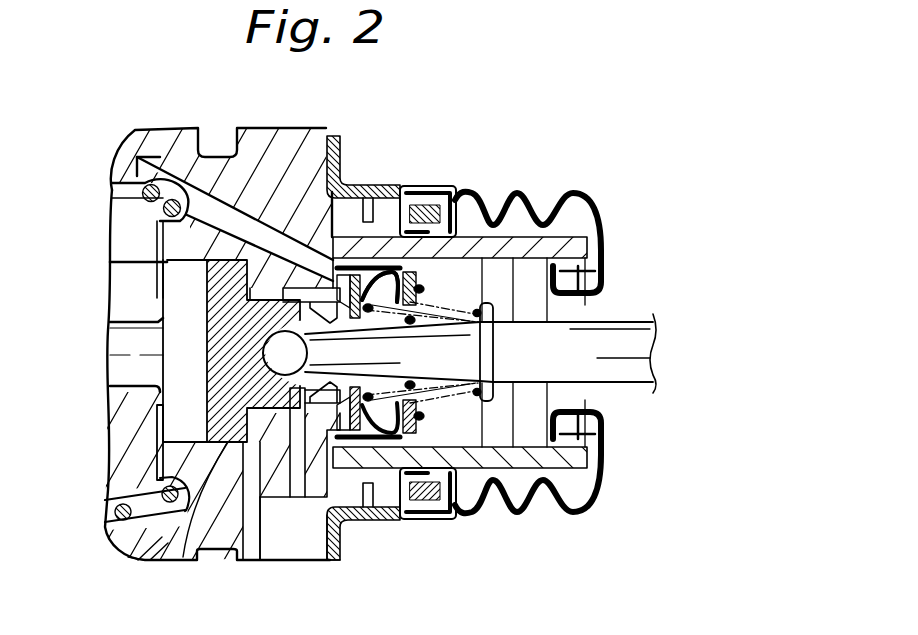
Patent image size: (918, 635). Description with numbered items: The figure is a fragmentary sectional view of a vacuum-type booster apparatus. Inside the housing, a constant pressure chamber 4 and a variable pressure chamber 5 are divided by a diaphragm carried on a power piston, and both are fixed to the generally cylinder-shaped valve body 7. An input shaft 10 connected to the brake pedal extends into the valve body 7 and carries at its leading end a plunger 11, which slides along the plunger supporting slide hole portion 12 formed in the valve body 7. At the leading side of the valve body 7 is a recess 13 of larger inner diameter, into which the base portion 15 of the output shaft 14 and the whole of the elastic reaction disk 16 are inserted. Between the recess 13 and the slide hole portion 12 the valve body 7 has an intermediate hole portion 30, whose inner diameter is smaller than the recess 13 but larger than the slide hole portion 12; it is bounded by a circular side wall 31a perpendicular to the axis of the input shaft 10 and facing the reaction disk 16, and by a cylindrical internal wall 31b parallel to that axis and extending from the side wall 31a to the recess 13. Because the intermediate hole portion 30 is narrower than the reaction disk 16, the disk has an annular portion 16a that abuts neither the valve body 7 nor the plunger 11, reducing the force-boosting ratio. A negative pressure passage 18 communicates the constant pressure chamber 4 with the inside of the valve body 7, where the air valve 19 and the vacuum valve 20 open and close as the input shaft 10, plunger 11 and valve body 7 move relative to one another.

The constant pressure chamber 4 is at (122, 470).
The variable pressure chamber 5 is at (307, 540).
The valve body 7 is at (147, 562).
The input shaft 10 is at (610, 335).
The plunger 11 is at (150, 423).
The plunger supporting slide hole portion 12 is at (338, 192).
The recess 13 is at (125, 233).
The output shaft 14 is at (117, 370).
The base portion 15 is at (165, 303).
The elastic reaction disk 16 is at (135, 340).
The annular portion 16a is at (165, 270).
The negative pressure passage 18 is at (270, 285).
The air valve 19 is at (352, 520).
The vacuum valve 20 is at (378, 197).
The intermediate hole portion 30 is at (322, 445).
The circular side wall 31a is at (250, 550).
The cylindrical internal wall 31b is at (182, 559).